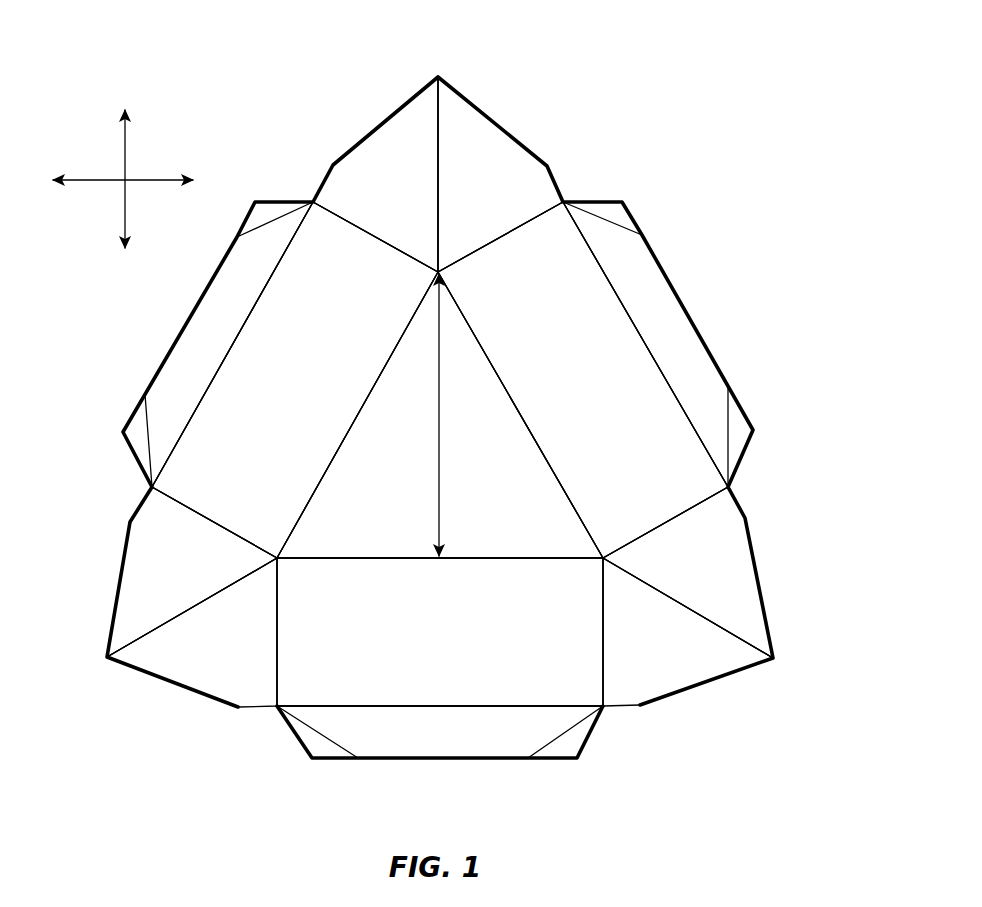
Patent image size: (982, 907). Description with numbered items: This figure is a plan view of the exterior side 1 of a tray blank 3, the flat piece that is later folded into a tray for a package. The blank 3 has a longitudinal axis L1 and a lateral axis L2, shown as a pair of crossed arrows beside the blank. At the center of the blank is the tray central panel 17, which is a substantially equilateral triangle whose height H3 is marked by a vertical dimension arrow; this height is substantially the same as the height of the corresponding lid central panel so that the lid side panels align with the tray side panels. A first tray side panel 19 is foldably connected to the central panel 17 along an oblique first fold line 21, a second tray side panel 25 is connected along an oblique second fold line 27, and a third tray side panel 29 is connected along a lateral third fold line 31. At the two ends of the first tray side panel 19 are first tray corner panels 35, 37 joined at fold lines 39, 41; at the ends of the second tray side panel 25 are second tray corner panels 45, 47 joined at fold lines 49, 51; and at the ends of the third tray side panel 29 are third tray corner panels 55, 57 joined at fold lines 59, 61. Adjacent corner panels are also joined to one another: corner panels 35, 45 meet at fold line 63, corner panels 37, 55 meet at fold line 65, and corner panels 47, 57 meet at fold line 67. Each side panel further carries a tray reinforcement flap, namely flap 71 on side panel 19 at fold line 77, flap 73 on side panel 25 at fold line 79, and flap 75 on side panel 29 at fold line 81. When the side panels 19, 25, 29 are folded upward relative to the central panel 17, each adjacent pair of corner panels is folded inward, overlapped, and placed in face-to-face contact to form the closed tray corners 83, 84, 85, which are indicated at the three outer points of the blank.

The exterior side 1 is at (549, 243).
The tray blank 3 is at (515, 117).
The tray central panel 17 is at (508, 505).
The first tray side panel 19 is at (273, 387).
The first fold line 21 is at (320, 480).
The second tray side panel 25 is at (553, 320).
The second fold line 27 is at (547, 458).
The third tray side panel 29 is at (435, 629).
The third fold line 31 is at (375, 562).
The first tray corner panel 35 is at (385, 148).
The first tray corner panel 37 is at (153, 578).
The fold line 39 is at (355, 218).
The fold line 41 is at (213, 525).
The second tray corner panel 45 is at (502, 160).
The second tray corner panel 47 is at (740, 572).
The fold line 49 is at (518, 222).
The fold line 51 is at (670, 520).
The third tray corner panel 55 is at (195, 672).
The third tray corner panel 57 is at (673, 678).
The fold line 59 is at (277, 640).
The fold line 61 is at (605, 622).
The fold line 63 is at (438, 178).
The fold line 65 is at (155, 632).
The fold line 67 is at (692, 613).
The tray reinforcement flap 71 is at (178, 377).
The tray reinforcement flap 73 is at (650, 272).
The tray reinforcement flap 75 is at (400, 738).
The fold line 77 is at (242, 323).
The fold line 79 is at (658, 358).
The fold line 81 is at (460, 707).
The closed tray corner 83 is at (442, 62).
The closed tray corner 84 is at (103, 670).
The closed tray corner 85 is at (787, 663).
The height of the tray central panel H3 is at (439, 383).
The longitudinal axis L1 is at (125, 153).
The lateral axis L2 is at (143, 182).